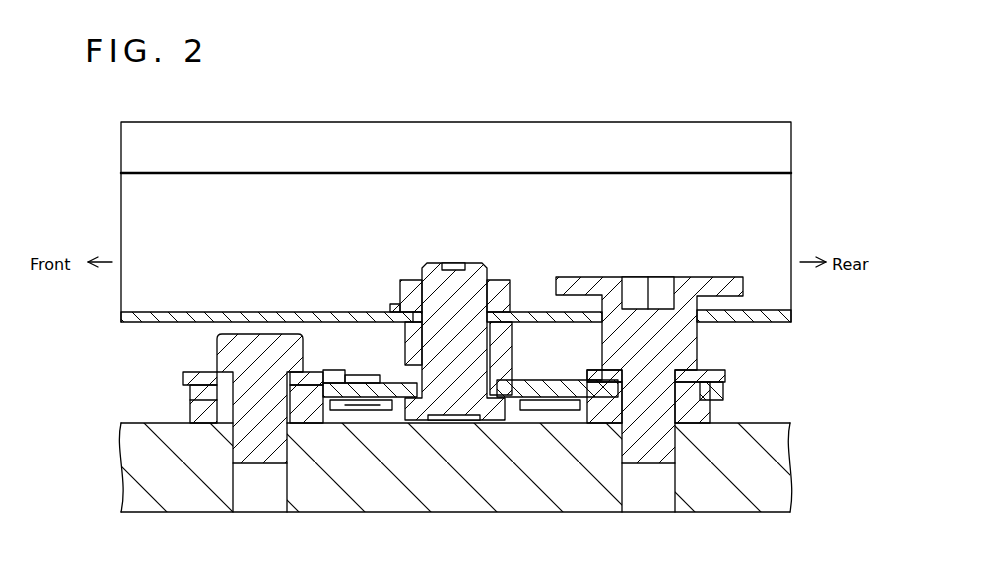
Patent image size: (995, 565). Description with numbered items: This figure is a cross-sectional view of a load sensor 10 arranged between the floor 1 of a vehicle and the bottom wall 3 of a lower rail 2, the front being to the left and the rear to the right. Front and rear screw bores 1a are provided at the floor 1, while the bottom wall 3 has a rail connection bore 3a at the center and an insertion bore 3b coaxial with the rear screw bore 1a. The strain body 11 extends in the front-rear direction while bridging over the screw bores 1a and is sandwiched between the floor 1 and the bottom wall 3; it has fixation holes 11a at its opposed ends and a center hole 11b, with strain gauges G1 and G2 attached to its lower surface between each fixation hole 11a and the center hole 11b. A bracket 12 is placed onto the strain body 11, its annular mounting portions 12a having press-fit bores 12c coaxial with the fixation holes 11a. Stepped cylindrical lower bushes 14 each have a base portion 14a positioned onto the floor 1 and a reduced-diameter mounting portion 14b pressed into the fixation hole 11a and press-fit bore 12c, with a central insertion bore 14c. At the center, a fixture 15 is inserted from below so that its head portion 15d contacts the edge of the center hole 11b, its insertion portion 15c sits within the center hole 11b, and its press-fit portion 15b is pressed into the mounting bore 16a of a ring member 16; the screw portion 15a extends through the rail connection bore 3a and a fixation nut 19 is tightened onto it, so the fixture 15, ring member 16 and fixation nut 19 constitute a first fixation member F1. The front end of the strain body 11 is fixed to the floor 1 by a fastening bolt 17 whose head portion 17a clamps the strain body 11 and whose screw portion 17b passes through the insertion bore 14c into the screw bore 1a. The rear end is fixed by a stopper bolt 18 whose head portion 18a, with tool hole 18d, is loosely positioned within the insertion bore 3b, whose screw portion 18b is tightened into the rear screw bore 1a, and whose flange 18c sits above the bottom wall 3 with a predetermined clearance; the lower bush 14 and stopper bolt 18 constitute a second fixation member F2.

The floor 1 is at (782, 420).
The screw bore 1a is at (283, 494).
The lower rail 2 is at (742, 119).
The bottom wall 3 is at (762, 323).
The rail connection bore 3a is at (486, 292).
The insertion bore 3b is at (705, 300).
The load sensor 10 is at (117, 360).
The strain body 11 is at (723, 392).
The fixation hole 11a is at (352, 384).
The center hole 11b is at (515, 381).
The bracket 12 is at (725, 374).
The mounting portion 12a is at (200, 374).
The press-fit bore 12c is at (262, 385).
The lower bush 14 is at (205, 425).
The base portion 14a is at (196, 406).
The mounting portion 14b is at (190, 392).
The insertion bore 14c is at (288, 405).
The fixture 15 is at (436, 266).
The screw portion 15a is at (413, 283).
The press-fit portion 15b is at (405, 346).
The insertion portion 15c is at (410, 422).
The head portion 15d is at (462, 422).
The ring member 16 is at (504, 292).
The mounting bore 16a is at (505, 345).
The fastening bolt 17 is at (294, 336).
The head portion 17a is at (233, 336).
The screw portion 17b is at (240, 447).
The stopper bolt 18 is at (598, 277).
The head portion 18a is at (684, 286).
The screw portion 18b is at (624, 455).
The flange 18c is at (744, 280).
The hole 18d is at (628, 286).
The fixation nut 19 is at (389, 302).
The first fixation member F1 is at (471, 252).
The second fixation member F2 is at (726, 260).
The strain gauge G1 is at (346, 412).
The strain gauge G2 is at (550, 412).